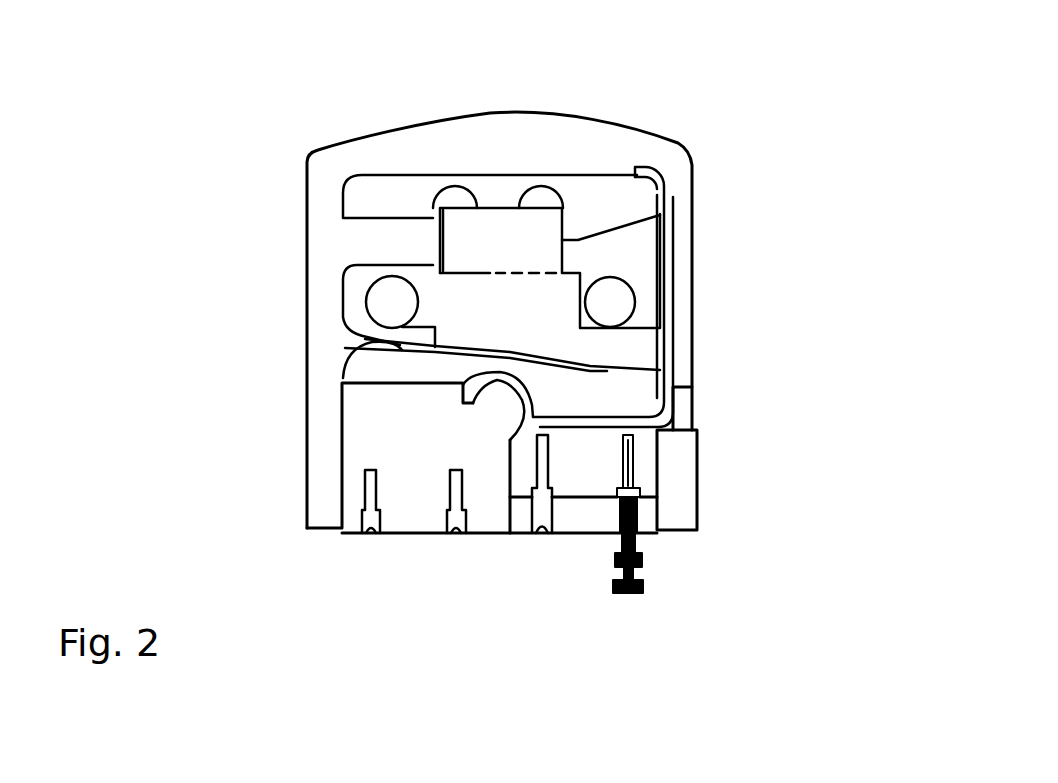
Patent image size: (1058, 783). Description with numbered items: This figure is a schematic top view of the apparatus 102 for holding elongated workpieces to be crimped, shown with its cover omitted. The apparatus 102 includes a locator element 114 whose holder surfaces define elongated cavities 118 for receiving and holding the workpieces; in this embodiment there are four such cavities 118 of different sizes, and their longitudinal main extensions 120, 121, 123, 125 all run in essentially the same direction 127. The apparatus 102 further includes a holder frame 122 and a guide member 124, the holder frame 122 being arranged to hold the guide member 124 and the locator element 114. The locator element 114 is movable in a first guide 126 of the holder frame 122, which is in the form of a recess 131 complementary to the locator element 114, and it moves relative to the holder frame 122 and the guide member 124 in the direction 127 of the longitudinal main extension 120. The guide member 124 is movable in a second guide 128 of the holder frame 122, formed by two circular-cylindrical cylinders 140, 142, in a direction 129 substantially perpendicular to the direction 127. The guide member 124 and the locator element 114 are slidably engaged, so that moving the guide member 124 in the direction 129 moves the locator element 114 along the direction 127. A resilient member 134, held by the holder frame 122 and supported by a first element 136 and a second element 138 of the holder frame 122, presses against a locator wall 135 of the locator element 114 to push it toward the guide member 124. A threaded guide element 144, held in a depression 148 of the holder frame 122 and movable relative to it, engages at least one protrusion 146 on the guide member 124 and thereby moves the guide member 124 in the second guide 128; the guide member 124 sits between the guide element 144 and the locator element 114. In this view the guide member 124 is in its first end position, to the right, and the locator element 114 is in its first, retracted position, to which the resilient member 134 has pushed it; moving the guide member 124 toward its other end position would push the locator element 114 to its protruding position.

The apparatus 102 is at (688, 76).
The locator element 114 is at (373, 420).
The elongated cavity 118 is at (367, 517).
The longitudinal main extension 120 is at (394, 471).
The longitudinal main extension 121 is at (484, 471).
The holder frame 122 is at (337, 247).
The longitudinal main extension 123 is at (574, 441).
The guide member 124 is at (668, 187).
The longitudinal main extension 125 is at (663, 441).
The first guide 126 is at (340, 440).
The direction 127 is at (346, 592).
The second guide 128 is at (667, 341).
The direction 129 is at (311, 57).
The recess 131 is at (355, 328).
The resilient member 134 is at (670, 297).
The locator wall 135 is at (383, 370).
The first element 136 is at (685, 415).
The second element 138 is at (633, 190).
The cylinder 140 is at (392, 305).
The cylinder 142 is at (613, 303).
The guide element 144 is at (492, 268).
The protrusion 146 is at (503, 228).
The depression 148 is at (503, 230).